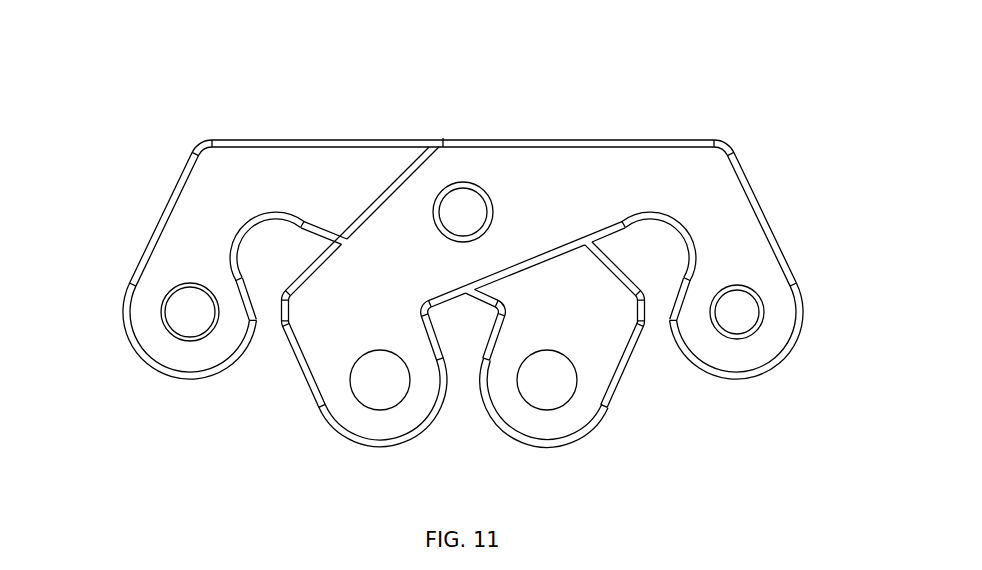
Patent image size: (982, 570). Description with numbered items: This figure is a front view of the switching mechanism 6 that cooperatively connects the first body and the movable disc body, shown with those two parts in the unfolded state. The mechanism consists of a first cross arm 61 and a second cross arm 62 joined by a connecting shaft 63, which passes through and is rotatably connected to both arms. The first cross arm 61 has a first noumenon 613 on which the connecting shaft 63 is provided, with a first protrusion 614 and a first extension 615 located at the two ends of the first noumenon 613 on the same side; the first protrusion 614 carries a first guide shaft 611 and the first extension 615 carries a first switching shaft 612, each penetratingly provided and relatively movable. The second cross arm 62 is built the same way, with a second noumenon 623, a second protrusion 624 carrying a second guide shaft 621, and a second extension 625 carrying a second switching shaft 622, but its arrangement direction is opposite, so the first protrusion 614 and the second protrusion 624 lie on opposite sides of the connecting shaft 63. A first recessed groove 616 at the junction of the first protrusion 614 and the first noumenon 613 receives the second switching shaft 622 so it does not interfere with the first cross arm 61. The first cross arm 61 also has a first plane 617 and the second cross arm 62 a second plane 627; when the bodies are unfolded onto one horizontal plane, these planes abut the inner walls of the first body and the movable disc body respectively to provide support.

The switching mechanism 6 is at (398, 75).
The first cross arm 61 is at (735, 220).
The second cross arm 62 is at (197, 226).
The connecting shaft 63 is at (459, 203).
The first guide shaft 611 is at (747, 310).
The first switching shaft 612 is at (361, 378).
The first noumenon 613 is at (607, 165).
The first protrusion 614 is at (770, 344).
The first extension 615 is at (363, 428).
The first recessed groove 616 is at (648, 256).
The first plane 617 is at (502, 134).
The second guide shaft 621 is at (183, 303).
The second switching shaft 622 is at (559, 376).
The second noumenon 623 is at (292, 165).
The second protrusion 624 is at (156, 337).
The second extension 625 is at (560, 425).
The second plane 627 is at (356, 134).